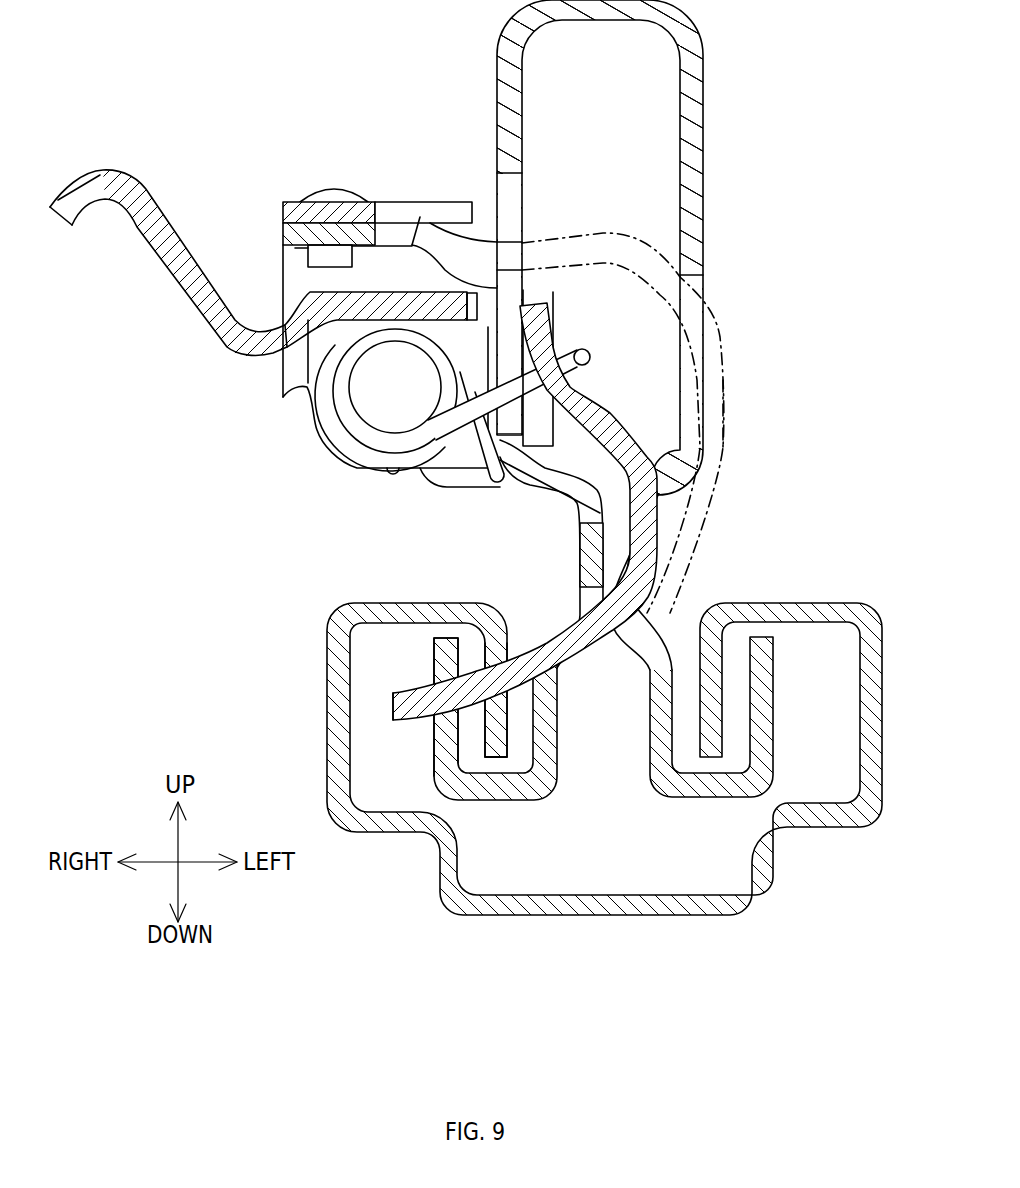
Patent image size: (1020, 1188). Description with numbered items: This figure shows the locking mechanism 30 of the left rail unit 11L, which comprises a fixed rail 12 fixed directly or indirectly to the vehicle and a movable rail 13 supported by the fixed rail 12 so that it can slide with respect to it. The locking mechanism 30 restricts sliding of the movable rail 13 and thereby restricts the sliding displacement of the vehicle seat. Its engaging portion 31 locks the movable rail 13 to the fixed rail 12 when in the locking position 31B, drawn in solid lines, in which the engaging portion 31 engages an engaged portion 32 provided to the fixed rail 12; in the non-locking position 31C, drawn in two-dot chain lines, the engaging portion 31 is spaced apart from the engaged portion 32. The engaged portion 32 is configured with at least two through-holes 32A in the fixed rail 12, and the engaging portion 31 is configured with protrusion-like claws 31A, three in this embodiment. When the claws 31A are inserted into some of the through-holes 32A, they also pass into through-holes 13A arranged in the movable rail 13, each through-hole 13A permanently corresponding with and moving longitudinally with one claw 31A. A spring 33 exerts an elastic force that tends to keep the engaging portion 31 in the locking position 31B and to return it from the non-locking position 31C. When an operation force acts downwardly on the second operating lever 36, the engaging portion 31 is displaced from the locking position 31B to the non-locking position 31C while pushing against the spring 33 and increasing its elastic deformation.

The left rail unit 11L is at (612, 797).
The fixed rail 12 is at (880, 777).
The movable rail 13 is at (703, 91).
The through-hole 13A is at (443, 720).
The locking mechanism 30 is at (387, 367).
The engaging portion 31 is at (408, 692).
The claw 31A is at (393, 705).
The locking position 31B is at (612, 407).
The non-locking position 31C is at (725, 403).
The engaged portion 32 is at (507, 745).
The through-hole 32A is at (497, 713).
The spring 33 is at (333, 398).
The second operating lever 36 is at (125, 168).